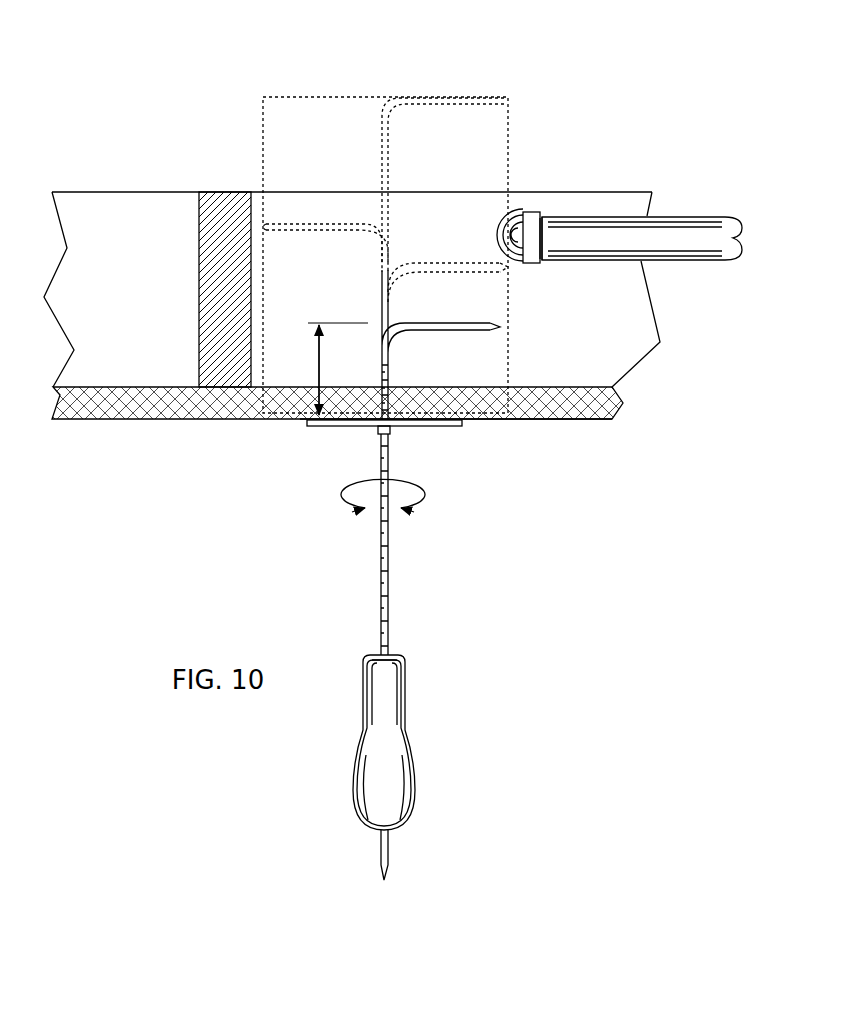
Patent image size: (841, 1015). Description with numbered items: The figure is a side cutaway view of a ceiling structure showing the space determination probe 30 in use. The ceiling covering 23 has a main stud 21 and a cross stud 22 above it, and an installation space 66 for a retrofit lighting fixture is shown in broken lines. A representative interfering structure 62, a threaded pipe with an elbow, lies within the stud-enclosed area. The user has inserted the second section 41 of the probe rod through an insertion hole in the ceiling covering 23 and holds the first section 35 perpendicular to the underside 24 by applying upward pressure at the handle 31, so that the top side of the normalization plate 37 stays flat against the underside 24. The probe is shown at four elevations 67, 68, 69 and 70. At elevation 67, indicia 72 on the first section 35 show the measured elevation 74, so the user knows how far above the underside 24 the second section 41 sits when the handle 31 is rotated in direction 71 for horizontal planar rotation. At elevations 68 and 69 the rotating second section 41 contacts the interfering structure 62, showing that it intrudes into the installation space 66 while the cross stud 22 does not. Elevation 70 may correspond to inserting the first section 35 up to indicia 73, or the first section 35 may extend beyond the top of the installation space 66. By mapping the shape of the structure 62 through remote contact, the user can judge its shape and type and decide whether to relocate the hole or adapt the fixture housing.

The main stud 21 is at (157, 215).
The cross stud 22 is at (218, 217).
The ceiling covering 23 is at (155, 413).
The underside 24 is at (560, 427).
The space determination probe 30 is at (360, 594).
The handle 31 is at (401, 733).
The first section 35 is at (389, 578).
The normalization plate 37 is at (312, 428).
The second section 41 is at (470, 322).
The interfering structure 62 is at (598, 232).
The installation space 66 is at (510, 125).
The elevation 67 is at (482, 327).
The elevation 68 is at (515, 267).
The elevation 69 is at (300, 220).
The elevation 70 is at (435, 97).
The direction 71 is at (362, 509).
The indicia 72 is at (390, 438).
The indicia 73 is at (386, 650).
The measured elevation 74 is at (324, 369).